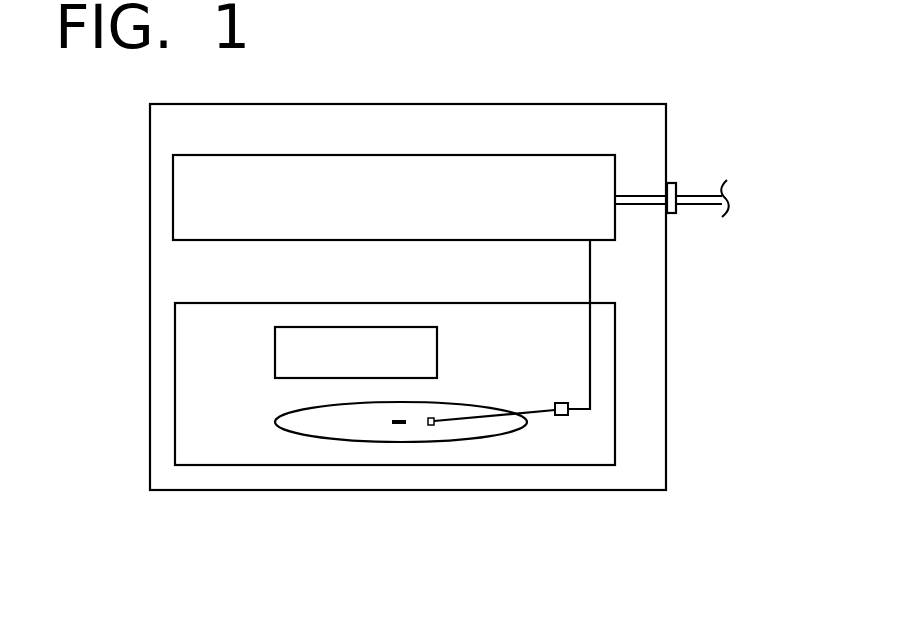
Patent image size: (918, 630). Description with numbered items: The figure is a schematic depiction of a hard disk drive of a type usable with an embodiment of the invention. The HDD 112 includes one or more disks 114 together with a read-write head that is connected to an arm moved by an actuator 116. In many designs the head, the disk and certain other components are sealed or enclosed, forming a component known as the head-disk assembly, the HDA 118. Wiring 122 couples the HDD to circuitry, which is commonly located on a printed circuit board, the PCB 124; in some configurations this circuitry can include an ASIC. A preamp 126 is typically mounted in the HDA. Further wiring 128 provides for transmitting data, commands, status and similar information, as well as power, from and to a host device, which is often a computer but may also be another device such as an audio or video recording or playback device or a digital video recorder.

The hard disk drive (HDD) 112 is at (666, 135).
The disk 114 is at (453, 440).
The actuator 116 is at (543, 413).
The head-disk assembly (HDA) 118 is at (615, 430).
The wiring 122 is at (589, 267).
The printed circuit board (PCB) 124 is at (482, 155).
The preamp 126 is at (322, 327).
The wiring 128 is at (693, 190).